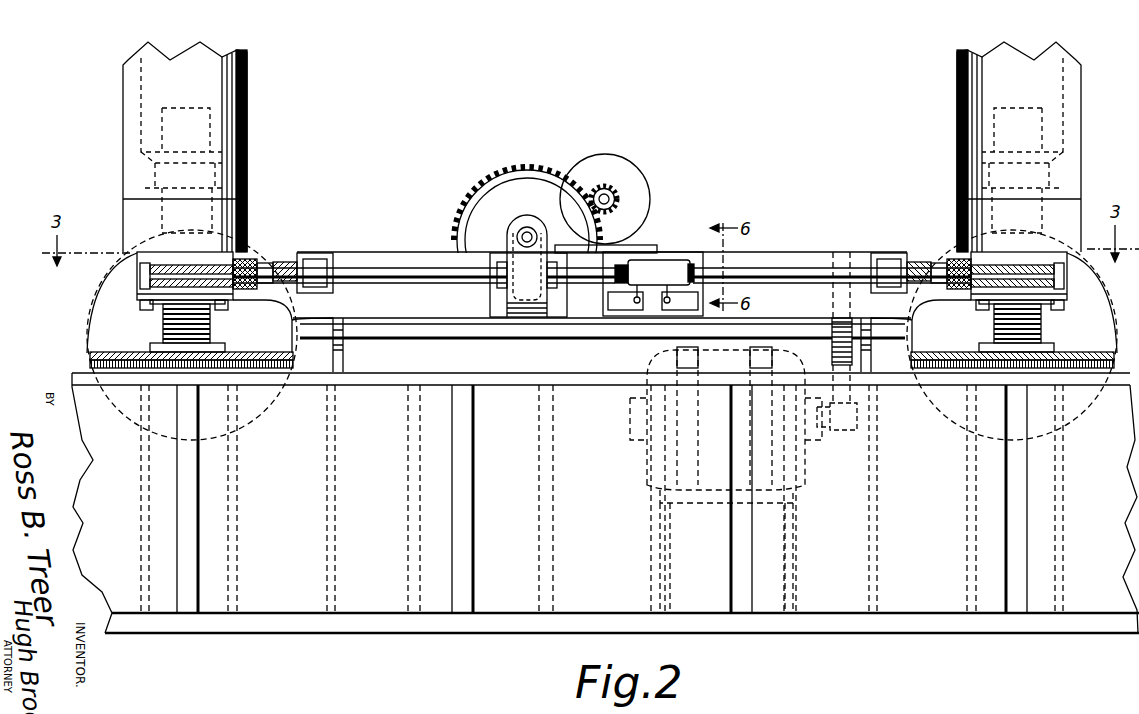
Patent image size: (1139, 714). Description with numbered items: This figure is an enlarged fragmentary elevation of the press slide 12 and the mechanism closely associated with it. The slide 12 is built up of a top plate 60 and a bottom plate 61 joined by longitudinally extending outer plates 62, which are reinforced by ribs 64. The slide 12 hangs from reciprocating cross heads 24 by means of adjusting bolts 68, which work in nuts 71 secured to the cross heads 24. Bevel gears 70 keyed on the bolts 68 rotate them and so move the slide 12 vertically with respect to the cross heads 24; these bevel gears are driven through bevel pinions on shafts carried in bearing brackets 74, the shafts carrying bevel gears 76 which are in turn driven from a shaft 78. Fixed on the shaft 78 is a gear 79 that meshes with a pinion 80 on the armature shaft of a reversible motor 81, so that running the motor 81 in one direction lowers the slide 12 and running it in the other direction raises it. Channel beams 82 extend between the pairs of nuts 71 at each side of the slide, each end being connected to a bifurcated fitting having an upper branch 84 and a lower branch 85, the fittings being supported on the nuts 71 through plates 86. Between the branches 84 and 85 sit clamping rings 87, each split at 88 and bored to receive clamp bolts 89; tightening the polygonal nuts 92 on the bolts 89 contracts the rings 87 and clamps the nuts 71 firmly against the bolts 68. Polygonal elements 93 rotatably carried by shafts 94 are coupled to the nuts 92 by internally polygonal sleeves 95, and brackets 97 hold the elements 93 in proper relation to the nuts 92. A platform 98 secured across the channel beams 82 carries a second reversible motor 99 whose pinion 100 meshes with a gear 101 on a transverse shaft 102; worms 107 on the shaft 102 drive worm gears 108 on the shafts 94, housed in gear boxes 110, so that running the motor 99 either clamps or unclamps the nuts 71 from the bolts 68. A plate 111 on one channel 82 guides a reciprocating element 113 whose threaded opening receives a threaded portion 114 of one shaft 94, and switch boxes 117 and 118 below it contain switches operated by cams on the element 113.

The slide 12 is at (870, 632).
The cross heads 24 is at (247, 105).
The top plate 60 is at (387, 380).
The bottom plate 61 is at (615, 616).
The outer plates 62 is at (380, 603).
The ribs 64 is at (193, 508).
The adjusting bolts 68 is at (165, 327).
The bevel gears 70 is at (115, 353).
The nuts 71 is at (125, 215).
The bearing brackets 74 is at (325, 352).
The bevel gears 76 is at (90, 320).
The shaft 78 is at (423, 338).
The gear 79 is at (830, 352).
The pinion 80 is at (848, 437).
The reversible motor 81 is at (647, 472).
The channel beams 82 is at (802, 253).
The upper branch 84 is at (137, 258).
The lower branch 85 is at (137, 295).
The plates 86 is at (140, 305).
The clamping rings 87 is at (229, 264).
The split 88 is at (187, 265).
The clamp bolts 89 is at (157, 264).
The nuts 92 is at (250, 289).
The elements 93 is at (287, 290).
The shafts 94 is at (395, 268).
The sleeve 95 is at (274, 260).
The brackets 97 is at (308, 257).
The platform 98 is at (615, 247).
The reversible motor 99 is at (605, 158).
The pinion 100 is at (612, 185).
The gear 101 is at (512, 163).
The transverse shaft 102 is at (537, 237).
The worms 107 is at (529, 218).
The worm gears 108 is at (507, 297).
The gear boxes 110 is at (542, 228).
The plate 111 is at (678, 254).
The reciprocating element 113 is at (661, 262).
The threaded portion 114 is at (622, 283).
The switch box 117 is at (627, 306).
The switch box 118 is at (693, 300).